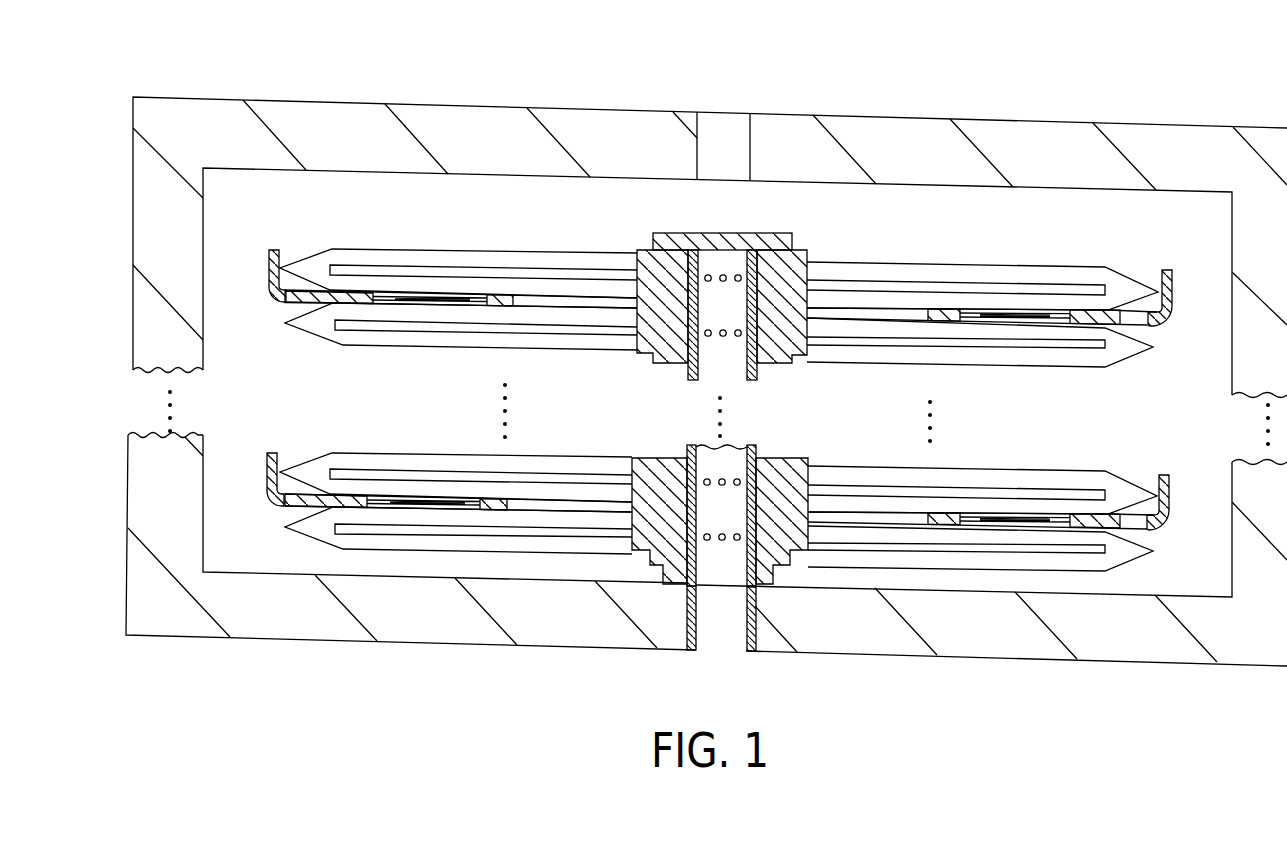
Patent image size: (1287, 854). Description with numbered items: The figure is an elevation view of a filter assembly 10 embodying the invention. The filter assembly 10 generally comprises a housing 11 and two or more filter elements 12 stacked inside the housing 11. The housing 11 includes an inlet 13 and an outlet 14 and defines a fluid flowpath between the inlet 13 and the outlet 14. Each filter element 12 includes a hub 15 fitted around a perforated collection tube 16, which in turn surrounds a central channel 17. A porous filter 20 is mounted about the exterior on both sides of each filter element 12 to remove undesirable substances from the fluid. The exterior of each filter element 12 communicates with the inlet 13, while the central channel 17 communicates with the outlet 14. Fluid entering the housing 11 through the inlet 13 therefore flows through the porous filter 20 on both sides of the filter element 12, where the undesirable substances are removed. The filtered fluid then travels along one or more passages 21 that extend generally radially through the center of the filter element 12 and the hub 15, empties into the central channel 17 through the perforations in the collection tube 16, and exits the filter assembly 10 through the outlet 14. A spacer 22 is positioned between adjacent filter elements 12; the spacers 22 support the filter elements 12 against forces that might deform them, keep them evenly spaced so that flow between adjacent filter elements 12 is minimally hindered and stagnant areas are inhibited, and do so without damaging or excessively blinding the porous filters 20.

The filter assembly 10 is at (1150, 90).
The housing 11 is at (920, 130).
The filter element 12 is at (1105, 272).
The inlet 13 is at (725, 127).
The outlet 14 is at (728, 640).
The hub 15 is at (805, 262).
The perforated collection tube 16 is at (735, 450).
The central channel 17 is at (718, 368).
The porous filter 20 is at (422, 268).
The passage 21 is at (503, 275).
The spacer 22 is at (283, 305).